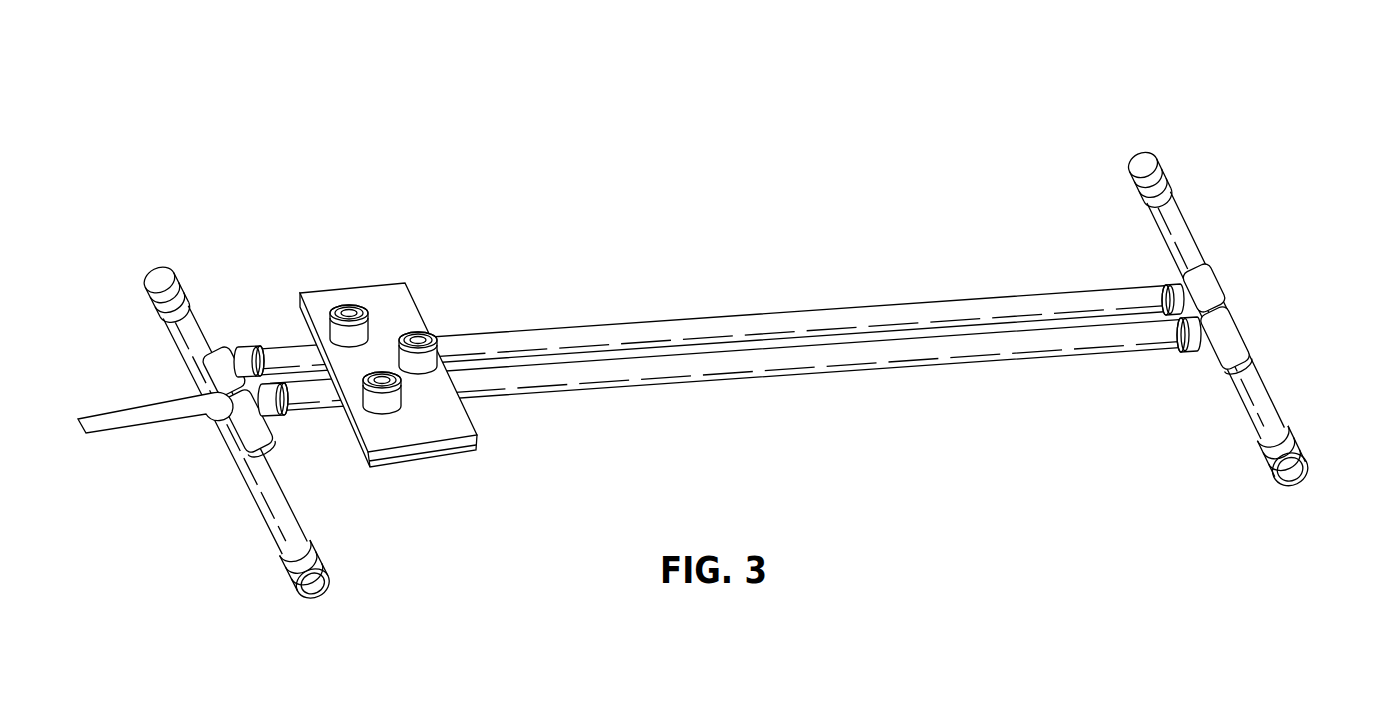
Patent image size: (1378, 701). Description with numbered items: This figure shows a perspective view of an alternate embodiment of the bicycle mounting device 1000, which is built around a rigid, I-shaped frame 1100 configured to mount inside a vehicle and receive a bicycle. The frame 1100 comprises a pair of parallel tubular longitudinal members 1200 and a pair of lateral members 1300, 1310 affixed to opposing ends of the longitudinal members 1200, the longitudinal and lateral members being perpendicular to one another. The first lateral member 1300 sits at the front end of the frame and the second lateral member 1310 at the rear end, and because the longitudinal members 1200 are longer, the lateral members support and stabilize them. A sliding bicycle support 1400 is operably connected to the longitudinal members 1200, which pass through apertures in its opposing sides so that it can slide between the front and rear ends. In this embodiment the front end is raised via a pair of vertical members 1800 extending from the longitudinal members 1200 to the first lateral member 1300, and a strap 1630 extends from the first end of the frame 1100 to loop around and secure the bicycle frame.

The bicycle mounting device 1000 is at (699, 320).
The frame 1100 is at (902, 370).
The longitudinal members 1200 is at (1065, 357).
The first lateral member 1300 is at (258, 513).
The second lateral member 1310 is at (1292, 433).
The sliding bicycle support 1400 is at (477, 442).
The strap 1630 is at (108, 432).
The vertical member 1800 is at (260, 427).